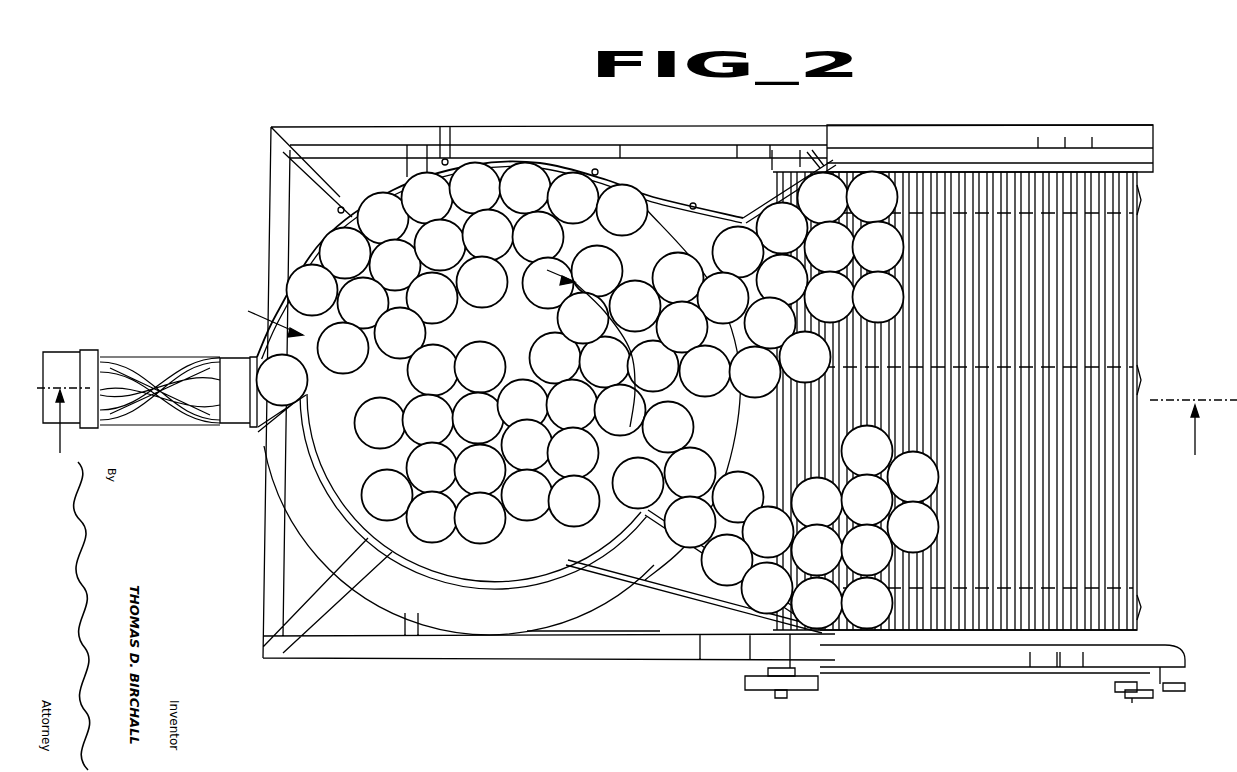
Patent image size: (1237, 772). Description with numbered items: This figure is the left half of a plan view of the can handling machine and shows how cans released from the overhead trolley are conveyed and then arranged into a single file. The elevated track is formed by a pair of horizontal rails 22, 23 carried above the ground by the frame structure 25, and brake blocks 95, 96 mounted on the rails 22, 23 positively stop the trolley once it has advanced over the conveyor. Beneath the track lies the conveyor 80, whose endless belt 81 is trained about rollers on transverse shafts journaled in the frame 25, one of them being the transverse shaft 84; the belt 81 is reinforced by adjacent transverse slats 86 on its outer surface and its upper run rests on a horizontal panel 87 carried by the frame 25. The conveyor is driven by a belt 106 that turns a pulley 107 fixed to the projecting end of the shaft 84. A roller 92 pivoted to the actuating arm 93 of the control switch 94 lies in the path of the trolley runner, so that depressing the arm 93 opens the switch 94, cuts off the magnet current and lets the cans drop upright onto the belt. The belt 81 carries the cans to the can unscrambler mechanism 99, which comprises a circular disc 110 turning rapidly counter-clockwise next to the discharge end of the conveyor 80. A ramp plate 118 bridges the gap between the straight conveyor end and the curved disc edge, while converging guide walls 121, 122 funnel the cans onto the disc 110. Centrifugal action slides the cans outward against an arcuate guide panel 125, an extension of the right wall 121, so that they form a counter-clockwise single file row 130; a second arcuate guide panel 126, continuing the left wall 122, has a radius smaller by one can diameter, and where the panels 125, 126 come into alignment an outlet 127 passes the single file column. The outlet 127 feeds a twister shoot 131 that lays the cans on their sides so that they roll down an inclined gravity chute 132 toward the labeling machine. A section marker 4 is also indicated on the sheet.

The section line 4- 4 is at (637, 410).
The rail 22 is at (1142, 146).
The rail 23 is at (1158, 660).
The frame structure 25 is at (498, 655).
The conveyor 80 is at (1105, 285).
The endless belt 81 is at (1140, 196).
The transverse shaft 84 is at (780, 692).
The transverse slats 86 is at (1105, 325).
The horizontal panel 87 is at (1140, 268).
The roller 92 is at (1115, 690).
The actuating arm 93 is at (1140, 698).
The control switch 94 is at (1155, 684).
The brake block 95 is at (1070, 140).
The brake block 96 is at (1075, 657).
The can unscrambler mechanism 99 is at (428, 348).
The belt 106 is at (795, 692).
The pulley 107 is at (808, 692).
The circular disc 110 is at (542, 551).
The ramp plate 118 is at (737, 190).
The guide wall 121 is at (773, 202).
The guide wall 122 is at (763, 617).
The arcuate guide panel 125 is at (522, 165).
The arcuate guide panel 126 is at (528, 579).
The outlet 127 is at (257, 428).
The single file row of cans 130 is at (473, 192).
The twister shoot 131 is at (200, 400).
The inclined gravity chute 132 is at (68, 412).